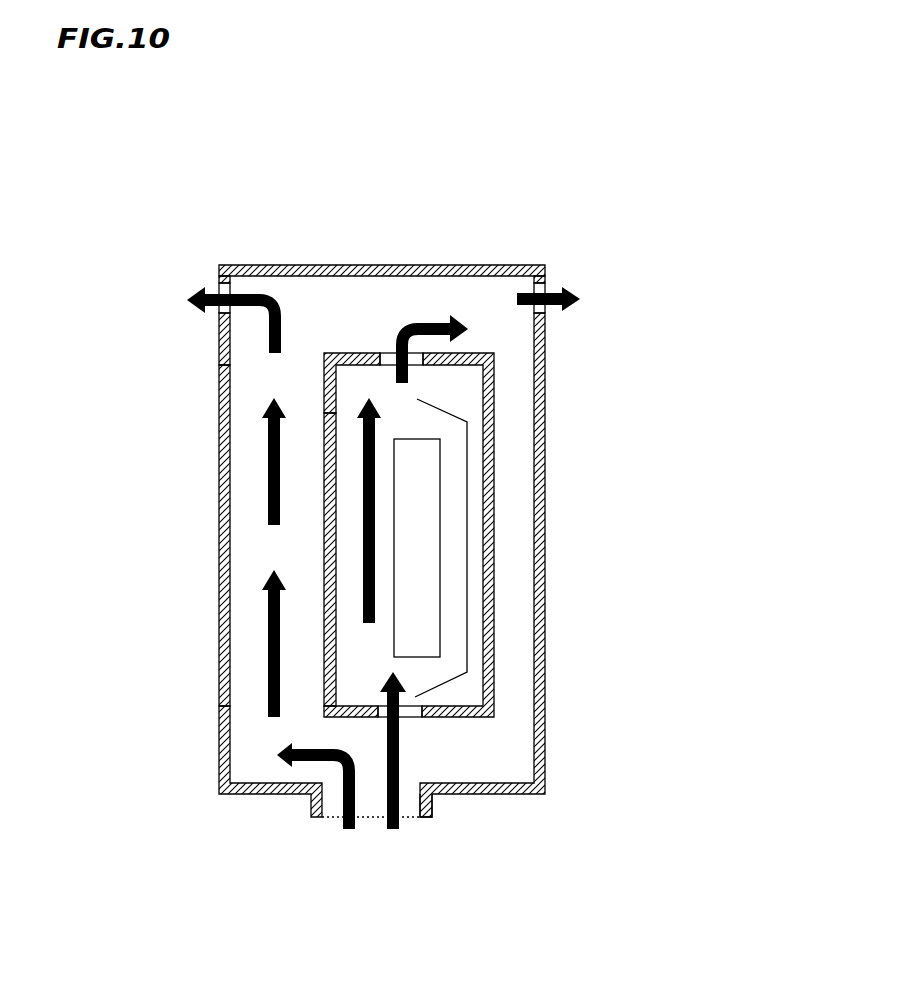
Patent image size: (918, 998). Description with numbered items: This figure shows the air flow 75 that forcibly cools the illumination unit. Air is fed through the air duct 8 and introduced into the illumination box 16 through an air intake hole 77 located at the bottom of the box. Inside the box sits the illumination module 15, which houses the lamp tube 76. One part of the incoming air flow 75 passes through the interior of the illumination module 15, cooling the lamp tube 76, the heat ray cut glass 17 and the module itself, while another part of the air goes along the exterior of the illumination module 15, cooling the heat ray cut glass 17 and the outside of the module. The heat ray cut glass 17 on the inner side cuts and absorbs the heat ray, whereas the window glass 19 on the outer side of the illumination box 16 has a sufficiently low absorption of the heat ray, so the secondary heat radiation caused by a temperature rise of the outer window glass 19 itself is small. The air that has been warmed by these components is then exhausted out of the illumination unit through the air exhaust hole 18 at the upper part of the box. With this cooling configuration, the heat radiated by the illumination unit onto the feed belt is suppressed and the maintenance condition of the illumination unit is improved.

The illumination box 16 is at (358, 265).
The air exhaust hole 18 is at (221, 290).
The air flow 75 is at (195, 305).
The window glass 19 is at (219, 437).
The heat ray cut glass 17 is at (324, 541).
The illumination module 15 is at (494, 532).
The lamp tube 76 is at (437, 545).
The air intake hole 77 is at (375, 818).
The air duct 8 is at (432, 810).